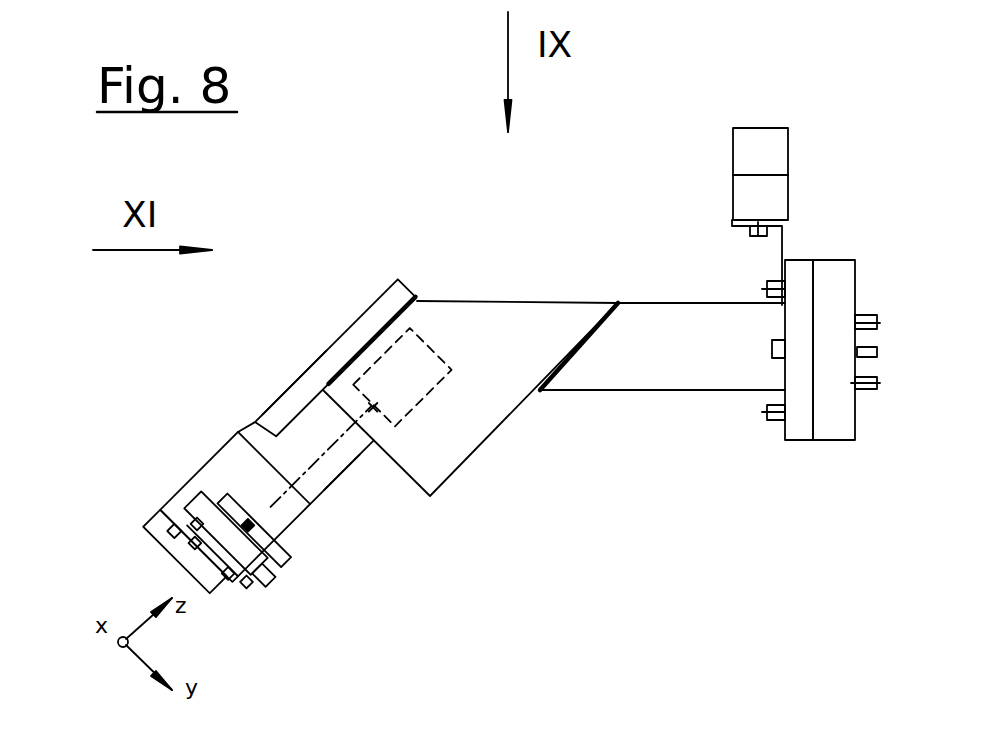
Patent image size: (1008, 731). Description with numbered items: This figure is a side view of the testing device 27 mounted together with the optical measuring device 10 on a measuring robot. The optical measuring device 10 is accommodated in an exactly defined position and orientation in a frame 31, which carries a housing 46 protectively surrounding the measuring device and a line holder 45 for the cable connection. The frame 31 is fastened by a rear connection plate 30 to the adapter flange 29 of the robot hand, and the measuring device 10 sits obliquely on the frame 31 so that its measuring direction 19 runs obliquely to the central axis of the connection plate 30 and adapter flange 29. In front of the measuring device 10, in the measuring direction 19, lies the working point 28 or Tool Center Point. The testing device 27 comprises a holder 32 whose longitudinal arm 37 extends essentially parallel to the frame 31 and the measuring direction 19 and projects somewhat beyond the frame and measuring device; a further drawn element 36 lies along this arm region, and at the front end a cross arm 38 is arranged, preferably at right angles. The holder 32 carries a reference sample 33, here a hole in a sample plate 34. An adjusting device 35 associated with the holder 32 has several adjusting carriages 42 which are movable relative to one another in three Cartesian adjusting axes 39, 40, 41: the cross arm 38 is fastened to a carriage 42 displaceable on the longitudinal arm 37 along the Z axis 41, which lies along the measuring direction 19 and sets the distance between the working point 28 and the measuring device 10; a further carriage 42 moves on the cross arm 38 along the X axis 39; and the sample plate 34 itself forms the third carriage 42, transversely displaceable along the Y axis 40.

The optical measuring device 10 is at (425, 400).
The measuring direction 19 is at (342, 470).
The testing device 27 is at (332, 290).
The working point 28 is at (252, 524).
The adapter flange 29 is at (838, 278).
The connection plate 30 is at (803, 280).
The frame 31 is at (698, 365).
The holder 32 is at (251, 355).
The reference sample 33 is at (332, 555).
The sample plate 34 is at (332, 555).
The adjusting device 35 is at (178, 470).
The slide rail 36 is at (408, 283).
The longitudinal arm 37 is at (285, 395).
The cross arm 38 is at (190, 522).
The adjusting axis 39 is at (273, 587).
The adjusting axis 40 is at (267, 552).
The adjusting axis 41 is at (217, 450).
The adjusting carriage 42 is at (307, 514).
The line holder 45 is at (763, 155).
The housing 46 is at (522, 335).